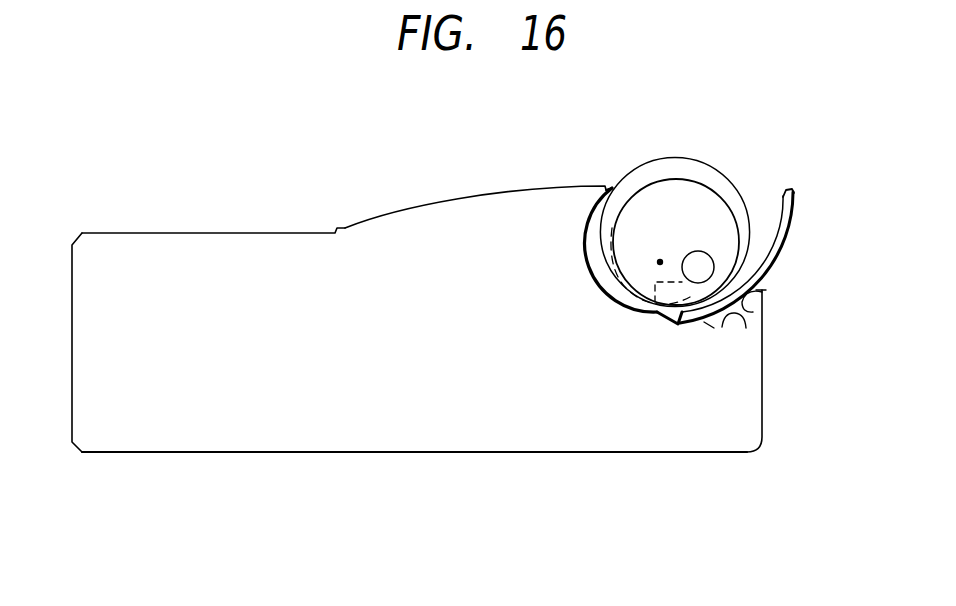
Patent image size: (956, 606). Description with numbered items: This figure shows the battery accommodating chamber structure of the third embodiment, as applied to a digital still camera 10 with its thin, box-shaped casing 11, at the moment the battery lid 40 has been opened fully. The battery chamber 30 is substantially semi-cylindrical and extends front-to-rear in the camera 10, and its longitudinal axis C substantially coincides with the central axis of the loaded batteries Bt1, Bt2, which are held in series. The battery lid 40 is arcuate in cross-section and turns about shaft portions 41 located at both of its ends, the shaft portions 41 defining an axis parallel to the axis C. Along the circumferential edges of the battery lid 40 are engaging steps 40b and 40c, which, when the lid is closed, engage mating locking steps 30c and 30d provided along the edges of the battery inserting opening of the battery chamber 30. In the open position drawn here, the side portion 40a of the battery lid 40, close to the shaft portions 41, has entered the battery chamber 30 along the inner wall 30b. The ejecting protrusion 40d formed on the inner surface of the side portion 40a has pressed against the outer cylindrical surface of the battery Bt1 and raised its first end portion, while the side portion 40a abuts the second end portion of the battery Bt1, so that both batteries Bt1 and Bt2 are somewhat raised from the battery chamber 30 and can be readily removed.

The digital still camera 10 is at (150, 130).
The casing 11 is at (245, 245).
The battery chamber 30 is at (612, 291).
The inner wall of battery chamber 30b is at (716, 330).
The locking step 30c is at (612, 188).
The locking step 30d is at (747, 316).
The battery lid 40 is at (793, 227).
The side portion of battery lid 40a is at (700, 330).
The engaging step 40b is at (785, 194).
The engaging step 40c is at (665, 322).
The ejecting protrusion 40d is at (650, 305).
The shaft portion 41 is at (704, 268).
The battery Bt1 is at (705, 170).
The battery Bt2 is at (655, 200).
The longitudinal axis of battery chamber C is at (661, 264).